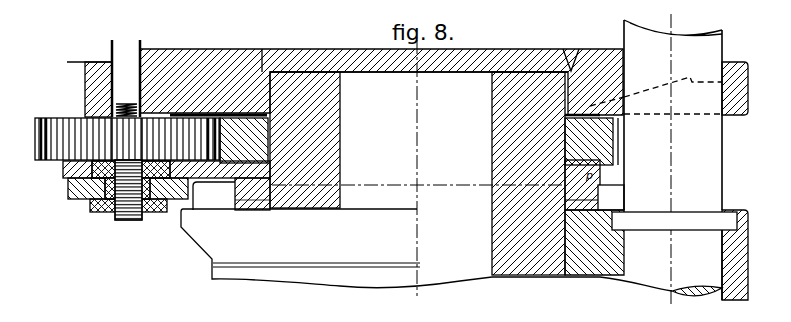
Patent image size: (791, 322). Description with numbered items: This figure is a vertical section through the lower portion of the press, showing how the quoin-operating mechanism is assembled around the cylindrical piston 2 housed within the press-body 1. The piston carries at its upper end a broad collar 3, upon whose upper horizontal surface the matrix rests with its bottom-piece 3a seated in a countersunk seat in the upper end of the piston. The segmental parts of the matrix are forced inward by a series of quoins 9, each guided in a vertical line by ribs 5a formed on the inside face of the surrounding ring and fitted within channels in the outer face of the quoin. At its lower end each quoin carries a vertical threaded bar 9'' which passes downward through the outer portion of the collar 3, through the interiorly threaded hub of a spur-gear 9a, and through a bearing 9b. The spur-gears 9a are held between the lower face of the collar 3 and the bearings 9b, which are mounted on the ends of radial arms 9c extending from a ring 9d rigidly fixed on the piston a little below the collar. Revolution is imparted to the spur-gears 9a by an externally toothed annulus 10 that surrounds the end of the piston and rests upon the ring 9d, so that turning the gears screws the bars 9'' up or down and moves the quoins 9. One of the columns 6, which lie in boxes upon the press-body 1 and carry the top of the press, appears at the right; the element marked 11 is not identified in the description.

The press-body 1 is at (426, 250).
The cylindrical piston 2 is at (435, 173).
The collar 3 is at (593, 100).
The bottom-piece 3a is at (415, 60).
The ribs 5a is at (39, 118).
The columns 6 is at (697, 279).
The quoins 9 is at (126, 78).
The spur-gears 9a is at (127, 139).
The bearings 9b is at (63, 174).
The threaded bars 9'' is at (128, 202).
The radial arms 9c is at (634, 182).
The ring 9d is at (574, 213).
The toothed annulus 10 is at (419, 140).
The support 11 is at (252, 190).